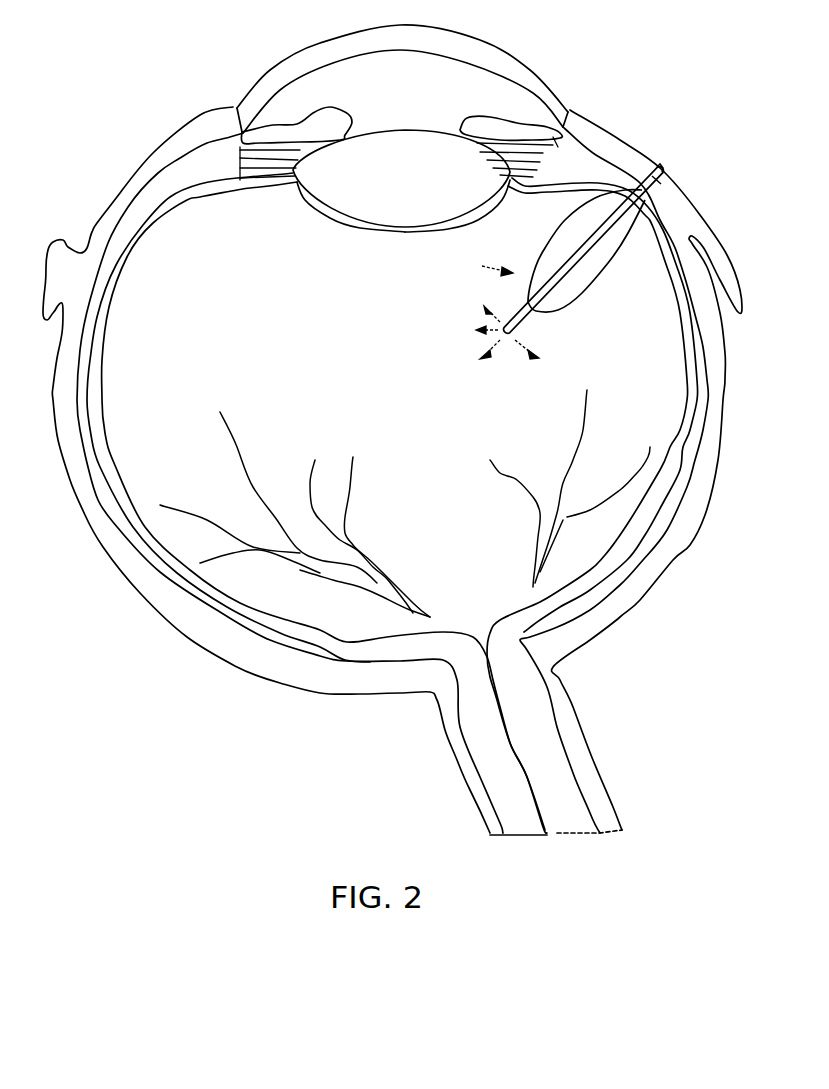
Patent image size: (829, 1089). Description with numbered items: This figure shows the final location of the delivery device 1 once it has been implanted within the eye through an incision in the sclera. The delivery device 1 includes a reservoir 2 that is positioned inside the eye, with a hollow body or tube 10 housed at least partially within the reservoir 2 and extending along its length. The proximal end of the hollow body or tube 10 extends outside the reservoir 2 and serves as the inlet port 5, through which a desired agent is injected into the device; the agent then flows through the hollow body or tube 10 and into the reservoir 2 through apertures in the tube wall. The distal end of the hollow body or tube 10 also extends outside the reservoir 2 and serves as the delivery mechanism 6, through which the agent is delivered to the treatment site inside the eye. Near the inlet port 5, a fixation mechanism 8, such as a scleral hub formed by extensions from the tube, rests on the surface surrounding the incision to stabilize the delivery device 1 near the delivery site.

The delivery device 1 is at (489, 265).
The reservoir 2 is at (580, 300).
The inlet port 5 is at (666, 172).
The delivery mechanism 6 is at (508, 342).
The fixation mechanism 8 is at (655, 165).
The hollow body or tube 10 is at (663, 182).